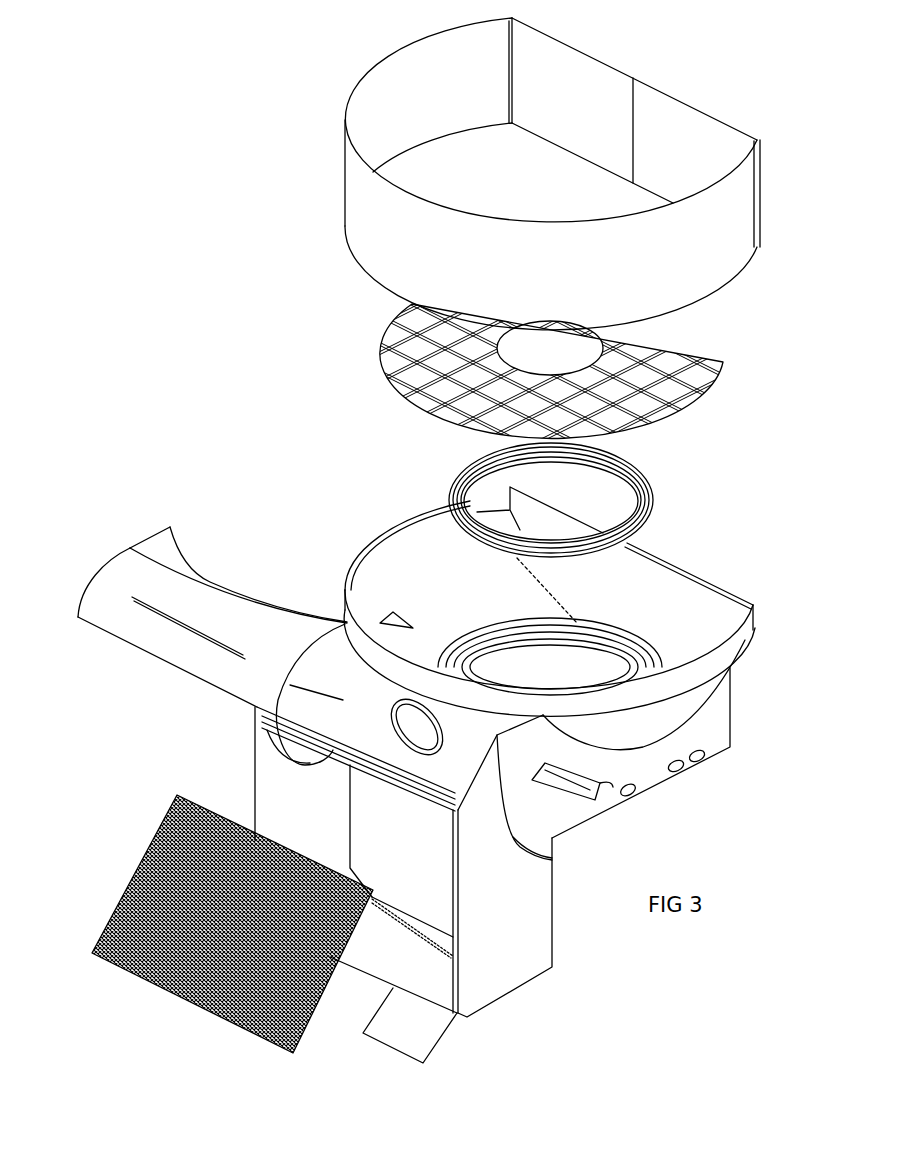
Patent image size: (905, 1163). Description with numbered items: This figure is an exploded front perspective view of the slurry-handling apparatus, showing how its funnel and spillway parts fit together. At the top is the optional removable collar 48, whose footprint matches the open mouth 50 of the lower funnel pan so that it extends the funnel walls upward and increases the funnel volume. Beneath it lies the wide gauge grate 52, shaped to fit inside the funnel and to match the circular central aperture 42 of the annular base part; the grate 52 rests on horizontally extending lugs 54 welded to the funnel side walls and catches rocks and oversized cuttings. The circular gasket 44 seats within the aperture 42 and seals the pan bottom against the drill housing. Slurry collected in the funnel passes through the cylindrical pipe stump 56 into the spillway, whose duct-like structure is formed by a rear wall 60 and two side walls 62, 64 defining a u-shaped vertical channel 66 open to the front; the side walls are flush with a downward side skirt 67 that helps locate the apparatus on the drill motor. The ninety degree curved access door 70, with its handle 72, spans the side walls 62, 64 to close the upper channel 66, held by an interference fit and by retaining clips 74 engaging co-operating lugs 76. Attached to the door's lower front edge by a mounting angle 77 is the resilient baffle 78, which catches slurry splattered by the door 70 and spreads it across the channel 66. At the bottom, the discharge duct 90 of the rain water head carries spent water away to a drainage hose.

The circular central aperture 42 is at (757, 640).
The circular gasket 44 is at (650, 493).
The removable collar 48 is at (727, 267).
The open mouth 50 is at (707, 597).
The wide gauge grate 52 is at (660, 420).
The horizontally extending lugs 54 is at (608, 618).
The cylindrical pipe stump 56 is at (458, 700).
The rear wall 60 is at (177, 953).
The side wall 62 is at (545, 890).
The side wall 64 is at (267, 787).
The vertical channel 66 is at (406, 847).
The side skirt 67 is at (660, 777).
The curved access door 70 is at (103, 612).
The handle 72 is at (132, 597).
The retaining clips 74 is at (613, 787).
The co-operating lugs 76 is at (552, 857).
The mounting angle 77 is at (303, 700).
The baffle 78 is at (290, 753).
The discharge duct 90 is at (428, 1047).